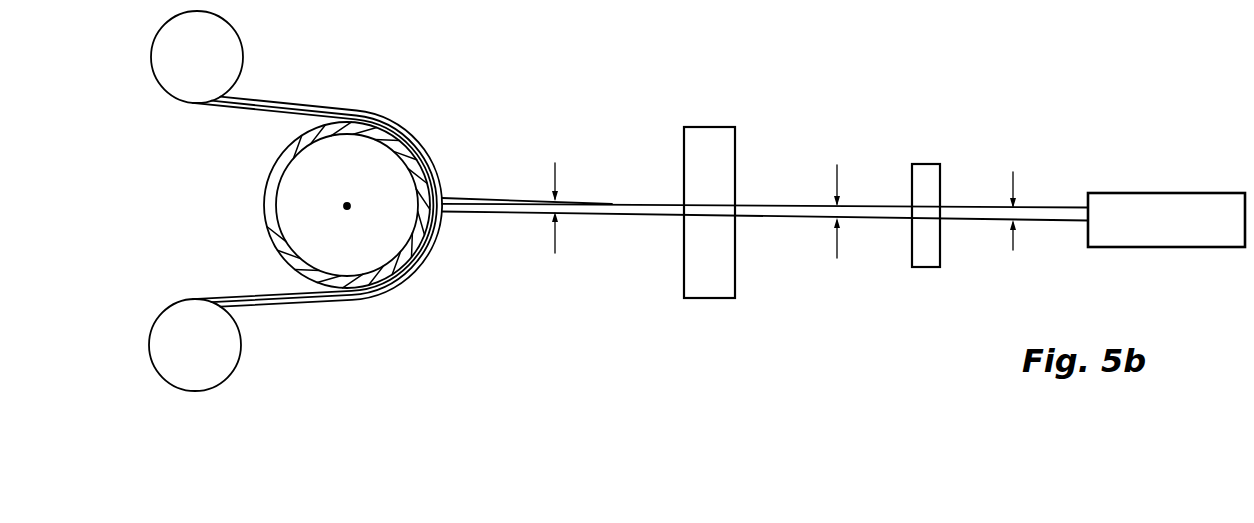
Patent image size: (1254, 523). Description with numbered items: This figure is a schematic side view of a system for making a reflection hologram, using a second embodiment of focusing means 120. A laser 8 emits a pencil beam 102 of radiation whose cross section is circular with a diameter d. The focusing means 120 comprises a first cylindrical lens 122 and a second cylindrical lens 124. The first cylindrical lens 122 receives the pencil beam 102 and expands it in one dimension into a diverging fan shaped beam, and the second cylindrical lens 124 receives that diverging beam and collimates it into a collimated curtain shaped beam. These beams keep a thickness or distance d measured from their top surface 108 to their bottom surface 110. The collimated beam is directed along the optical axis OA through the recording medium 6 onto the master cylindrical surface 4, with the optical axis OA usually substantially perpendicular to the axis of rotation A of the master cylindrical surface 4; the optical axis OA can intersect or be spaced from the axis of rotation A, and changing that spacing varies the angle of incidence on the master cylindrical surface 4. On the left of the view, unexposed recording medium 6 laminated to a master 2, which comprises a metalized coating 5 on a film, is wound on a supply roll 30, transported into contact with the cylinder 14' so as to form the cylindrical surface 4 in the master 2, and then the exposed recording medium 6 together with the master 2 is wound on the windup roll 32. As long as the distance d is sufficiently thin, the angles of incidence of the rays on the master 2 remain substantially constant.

The master 2 is at (237, 108).
The master cylindrical surface 4 is at (347, 231).
The metalized coating 5 is at (283, 109).
The recording medium 6 is at (272, 101).
The laser 8 is at (1181, 196).
The drum coating layer 14' is at (348, 205).
The supply roll 30 is at (182, 361).
The windup roll 32 is at (212, 72).
The pencil beam 102 is at (782, 194).
The top surface 108 is at (472, 198).
The bottom surface 110 is at (502, 213).
The focusing means 120 is at (830, 201).
The first cylindrical lens 122 is at (920, 267).
The second cylindrical lens 124 is at (687, 299).
The axis of rotation A is at (357, 204).
The optical axis OA is at (603, 205).
The diameter d is at (784, 205).